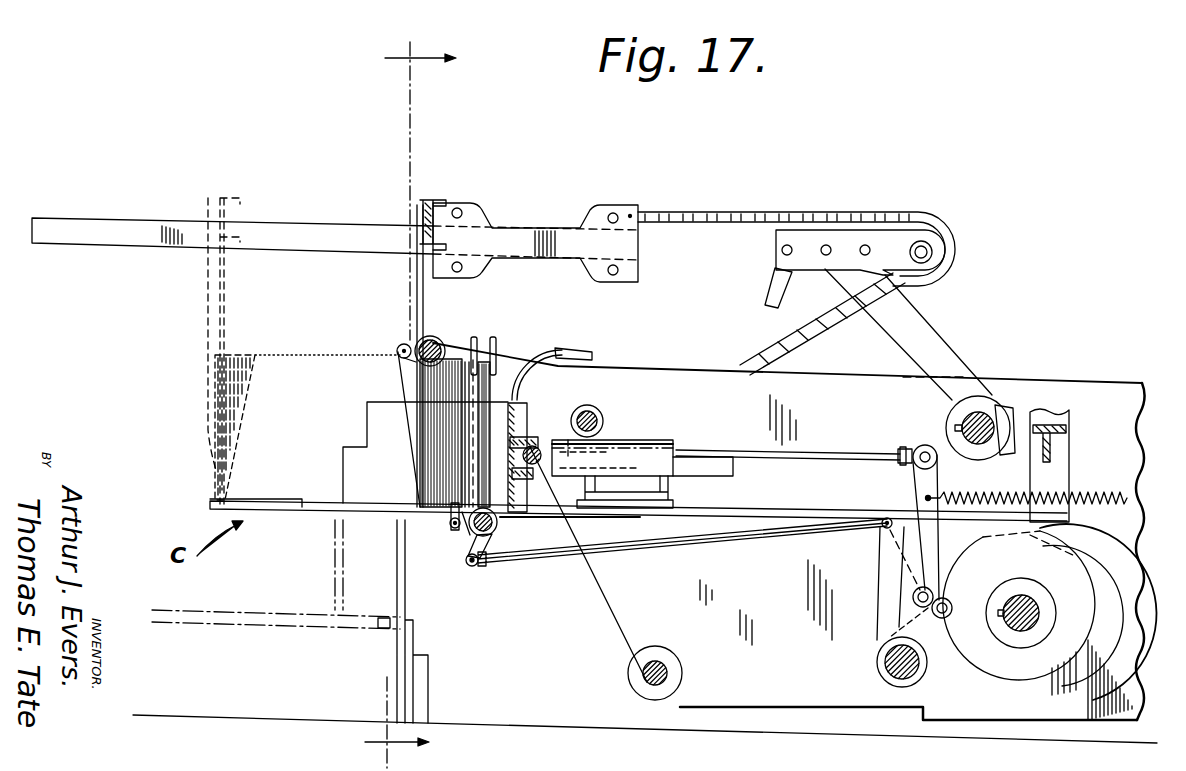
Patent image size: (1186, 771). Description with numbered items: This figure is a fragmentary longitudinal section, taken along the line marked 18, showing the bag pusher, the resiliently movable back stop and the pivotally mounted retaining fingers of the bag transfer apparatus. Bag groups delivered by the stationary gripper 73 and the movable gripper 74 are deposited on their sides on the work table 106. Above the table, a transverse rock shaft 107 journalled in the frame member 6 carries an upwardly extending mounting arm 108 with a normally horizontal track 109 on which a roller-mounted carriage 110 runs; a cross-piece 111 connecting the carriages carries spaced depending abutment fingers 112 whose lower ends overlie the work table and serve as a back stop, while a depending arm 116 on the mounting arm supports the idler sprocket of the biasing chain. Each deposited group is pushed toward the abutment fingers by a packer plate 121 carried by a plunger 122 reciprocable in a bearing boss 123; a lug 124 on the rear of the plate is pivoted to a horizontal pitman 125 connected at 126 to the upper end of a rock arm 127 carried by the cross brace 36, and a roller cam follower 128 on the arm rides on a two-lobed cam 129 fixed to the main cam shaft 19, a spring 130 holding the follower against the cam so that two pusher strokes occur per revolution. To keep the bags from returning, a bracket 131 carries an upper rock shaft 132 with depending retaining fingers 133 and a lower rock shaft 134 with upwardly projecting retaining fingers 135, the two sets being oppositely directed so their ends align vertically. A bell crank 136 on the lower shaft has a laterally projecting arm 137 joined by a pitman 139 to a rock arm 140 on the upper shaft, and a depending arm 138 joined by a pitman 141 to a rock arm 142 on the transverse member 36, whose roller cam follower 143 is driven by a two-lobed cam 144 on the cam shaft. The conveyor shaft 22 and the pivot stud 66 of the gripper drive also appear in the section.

The frame member 6 is at (1140, 384).
The section line 18 is at (392, 399).
The main cam shaft 19 is at (1022, 600).
The shaft 22 is at (604, 420).
The frame brace rod 36 is at (897, 665).
The pivot stud 66 is at (655, 676).
The stationary gripper 73 is at (494, 337).
The movable gripper 74 is at (475, 337).
The work table 106 is at (309, 514).
The rock shaft 107 is at (977, 413).
The mounting arm 108 is at (918, 334).
The track 109 is at (352, 204).
The carriage 110 is at (540, 208).
The cross-piece 111 is at (232, 184).
The abutment finger 112 is at (208, 304).
The depending arm 116 is at (770, 293).
The packer plate 121 is at (508, 420).
The plunger 122 is at (716, 471).
The bearing boss 123 is at (666, 441).
The lug 124 is at (572, 404).
The pitman 125 is at (850, 431).
The pivotal connection 126 is at (906, 476).
The rock arm 127 is at (930, 470).
The roller cam follower 128 is at (958, 642).
The cam 129 is at (1098, 630).
The spring 130 is at (1090, 497).
The bracket 131 is at (537, 355).
The upper rock shaft 132 is at (436, 336).
The retaining finger 133 is at (466, 360).
The rock shaft 134 is at (500, 541).
The retaining finger 135 is at (420, 500).
The bell crank 136 is at (455, 540).
The laterally projecting arm 137 is at (450, 525).
The depending arm 138 is at (486, 568).
The pitman 139 is at (414, 366).
The rock arm 140 is at (408, 346).
The pitman 141 is at (640, 560).
The rock arm 142 is at (886, 548).
The roller cam follower 143 is at (905, 602).
The two-lobed cam 144 is at (1102, 590).